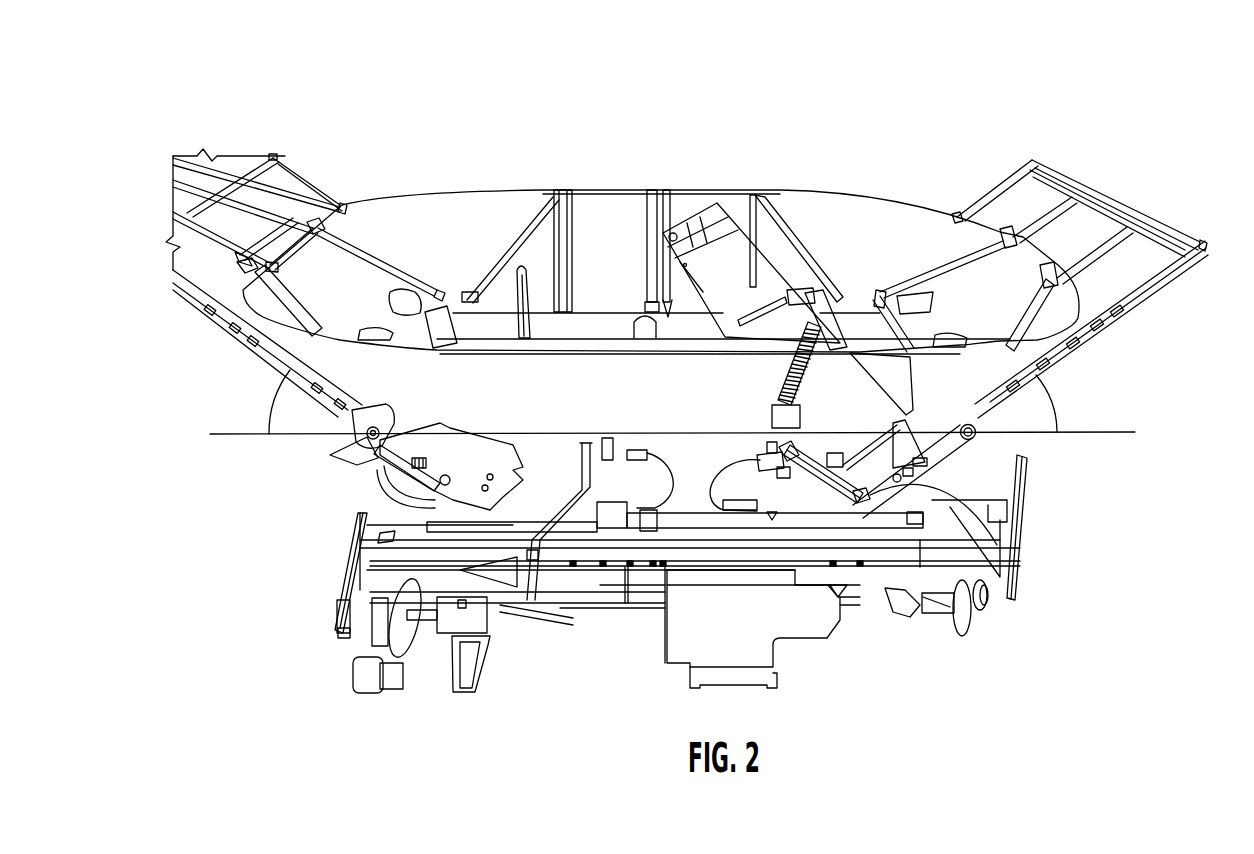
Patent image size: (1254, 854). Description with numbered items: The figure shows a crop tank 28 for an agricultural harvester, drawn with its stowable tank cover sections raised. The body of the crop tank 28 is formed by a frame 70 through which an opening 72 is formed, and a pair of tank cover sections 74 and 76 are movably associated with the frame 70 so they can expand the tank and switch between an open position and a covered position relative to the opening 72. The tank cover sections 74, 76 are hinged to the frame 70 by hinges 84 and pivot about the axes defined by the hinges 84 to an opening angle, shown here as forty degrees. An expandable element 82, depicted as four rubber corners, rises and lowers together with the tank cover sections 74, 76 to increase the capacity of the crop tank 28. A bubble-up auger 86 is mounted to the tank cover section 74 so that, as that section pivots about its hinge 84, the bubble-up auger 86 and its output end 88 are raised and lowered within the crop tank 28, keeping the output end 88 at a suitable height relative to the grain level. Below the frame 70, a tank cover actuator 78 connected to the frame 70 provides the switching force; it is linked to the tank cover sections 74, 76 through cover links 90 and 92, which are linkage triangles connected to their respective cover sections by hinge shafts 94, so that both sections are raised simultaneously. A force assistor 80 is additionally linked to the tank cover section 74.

The crop tank 28 is at (1018, 126).
The frame 70 is at (997, 465).
The opening 72 is at (613, 327).
The tank cover section 74 is at (1160, 275).
The tank cover section 76 is at (206, 316).
The tank cover actuator 78 is at (648, 452).
The force assistor 80 is at (838, 490).
The expandable element 82 is at (862, 237).
The hinges 84 is at (478, 298).
The bubble-up auger 86 is at (733, 250).
The output end 88 is at (703, 203).
The cover link 90 is at (1003, 545).
The cover link 92 is at (470, 460).
The hinge shafts 94 is at (376, 474).